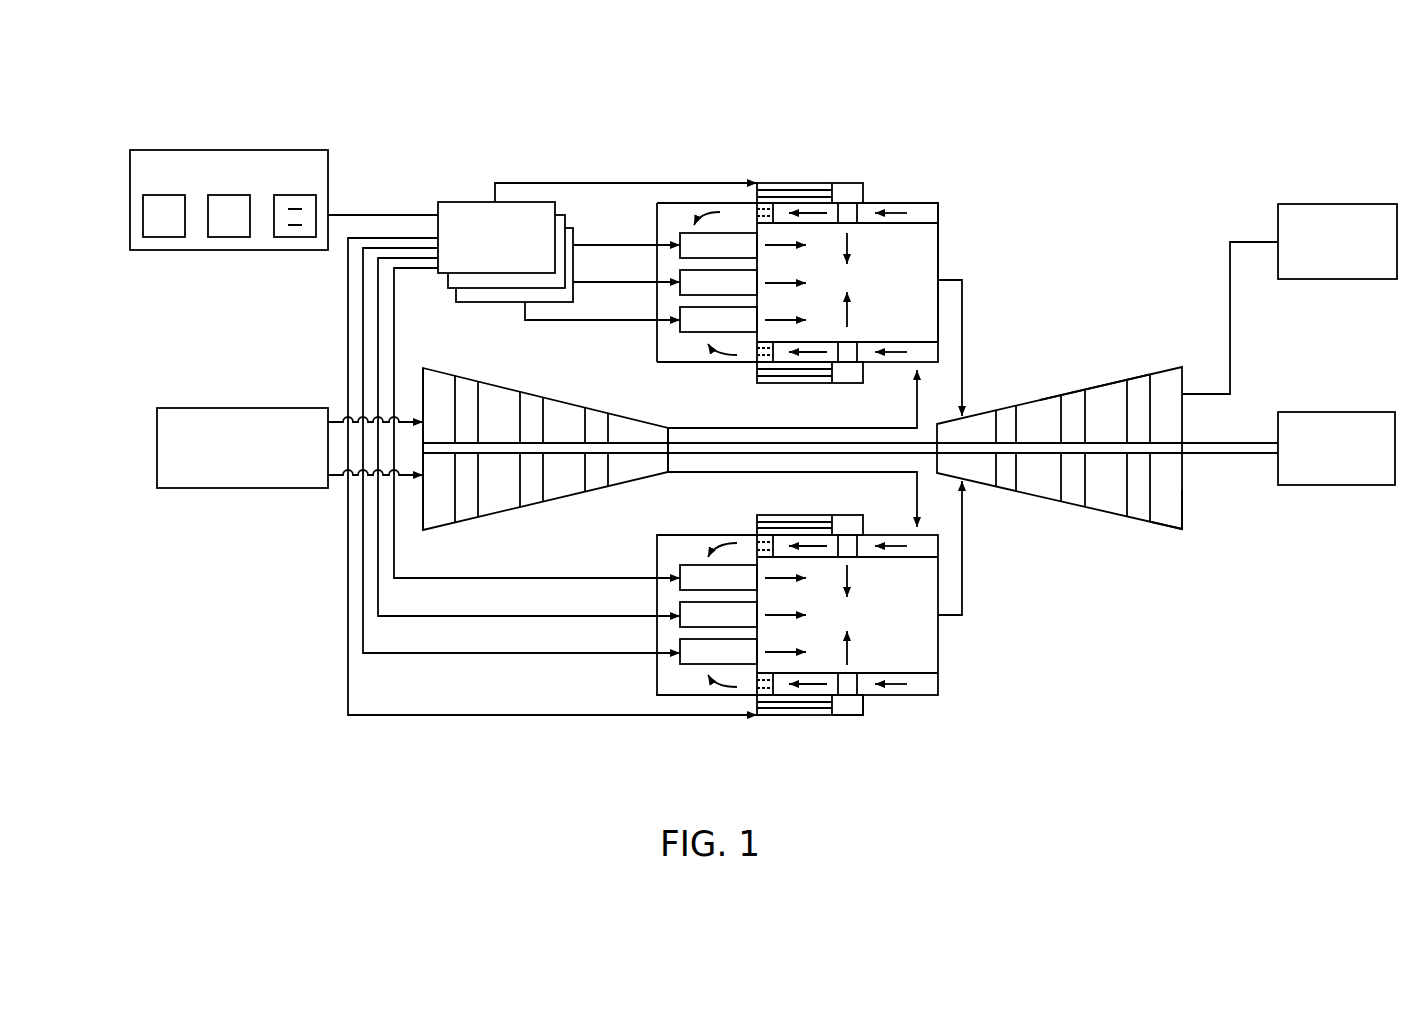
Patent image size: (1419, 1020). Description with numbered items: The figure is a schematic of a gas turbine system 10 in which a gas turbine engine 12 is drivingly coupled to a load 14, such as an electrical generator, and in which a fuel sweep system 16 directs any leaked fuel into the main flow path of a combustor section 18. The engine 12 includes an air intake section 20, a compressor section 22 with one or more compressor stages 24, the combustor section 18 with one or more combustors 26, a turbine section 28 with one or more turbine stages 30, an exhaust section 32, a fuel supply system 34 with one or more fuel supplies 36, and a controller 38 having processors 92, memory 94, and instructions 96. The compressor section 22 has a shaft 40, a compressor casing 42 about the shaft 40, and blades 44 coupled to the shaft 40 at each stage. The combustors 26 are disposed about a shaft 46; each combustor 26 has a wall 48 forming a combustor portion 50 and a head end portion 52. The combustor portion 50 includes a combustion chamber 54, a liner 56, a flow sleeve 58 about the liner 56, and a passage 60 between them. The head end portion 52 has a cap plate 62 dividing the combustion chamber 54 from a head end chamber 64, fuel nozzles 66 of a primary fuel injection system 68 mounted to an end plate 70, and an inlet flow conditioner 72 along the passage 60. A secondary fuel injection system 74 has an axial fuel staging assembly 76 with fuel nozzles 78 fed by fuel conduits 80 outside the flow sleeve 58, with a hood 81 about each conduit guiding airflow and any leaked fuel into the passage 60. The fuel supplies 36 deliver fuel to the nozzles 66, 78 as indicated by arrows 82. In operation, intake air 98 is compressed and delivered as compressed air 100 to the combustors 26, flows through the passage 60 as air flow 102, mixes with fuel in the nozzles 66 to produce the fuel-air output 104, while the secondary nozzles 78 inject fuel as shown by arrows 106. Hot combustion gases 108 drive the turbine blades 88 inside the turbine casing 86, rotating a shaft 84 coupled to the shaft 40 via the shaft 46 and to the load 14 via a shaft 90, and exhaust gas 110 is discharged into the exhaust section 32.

The gas turbine system 10 is at (1325, 98).
The gas turbine engine 12 is at (1145, 96).
The load 14 is at (1338, 412).
The fuel sweep system 16 is at (791, 172).
The combustor section 18 is at (799, 117).
The air intake section 20 is at (233, 490).
The compressor section 22 is at (450, 353).
The compressor stages 24 is at (527, 390).
The combustor 26 is at (939, 251).
The turbine section 28 is at (1072, 296).
The turbine stages 30 is at (1138, 522).
The exhaust section 32 is at (1339, 204).
The fuel supply system 34 is at (480, 150).
The fuel supply 36 is at (470, 200).
The controller 38 is at (230, 150).
The shaft 40 is at (442, 457).
The compressor casing 42 is at (640, 482).
The blades 44 is at (597, 493).
The shaft 46 is at (767, 455).
The wall 48 is at (683, 363).
The combustor portion 50 is at (881, 141).
The head end portion 52 is at (668, 200).
The combustion chamber 54 is at (841, 282).
The combustor liner 56 is at (939, 225).
The flow sleeve 58 is at (928, 200).
The passage 60 is at (939, 215).
The cap plate 62 is at (757, 208).
The head end chamber 64 is at (657, 229).
The fuel nozzles 66 is at (678, 249).
The primary fuel injection system 68 is at (629, 673).
The end plate 70 is at (650, 201).
The inlet flow conditioner 72 is at (758, 215).
The secondary fuel injection system 74 is at (904, 774).
The axial fuel staging assembly 76 is at (761, 738).
The fuel nozzles 78 is at (850, 717).
The fuel conduits 80 is at (812, 710).
The hood 81 is at (777, 717).
The arrows 82 is at (577, 240).
The shaft 84 is at (1162, 455).
The turbine casing 86 is at (1165, 527).
The turbine blades 88 is at (1138, 375).
The shaft 90 is at (1213, 442).
The processors 92 is at (167, 237).
The memory 94 is at (230, 237).
The instructions 96 is at (297, 237).
The arrows 98 is at (340, 480).
The arrows 100 is at (775, 428).
The arrows 102 is at (897, 213).
The arrows 104 is at (770, 283).
The arrows 106 is at (850, 242).
The arrows 108 is at (962, 346).
The arrow 110 is at (1230, 346).